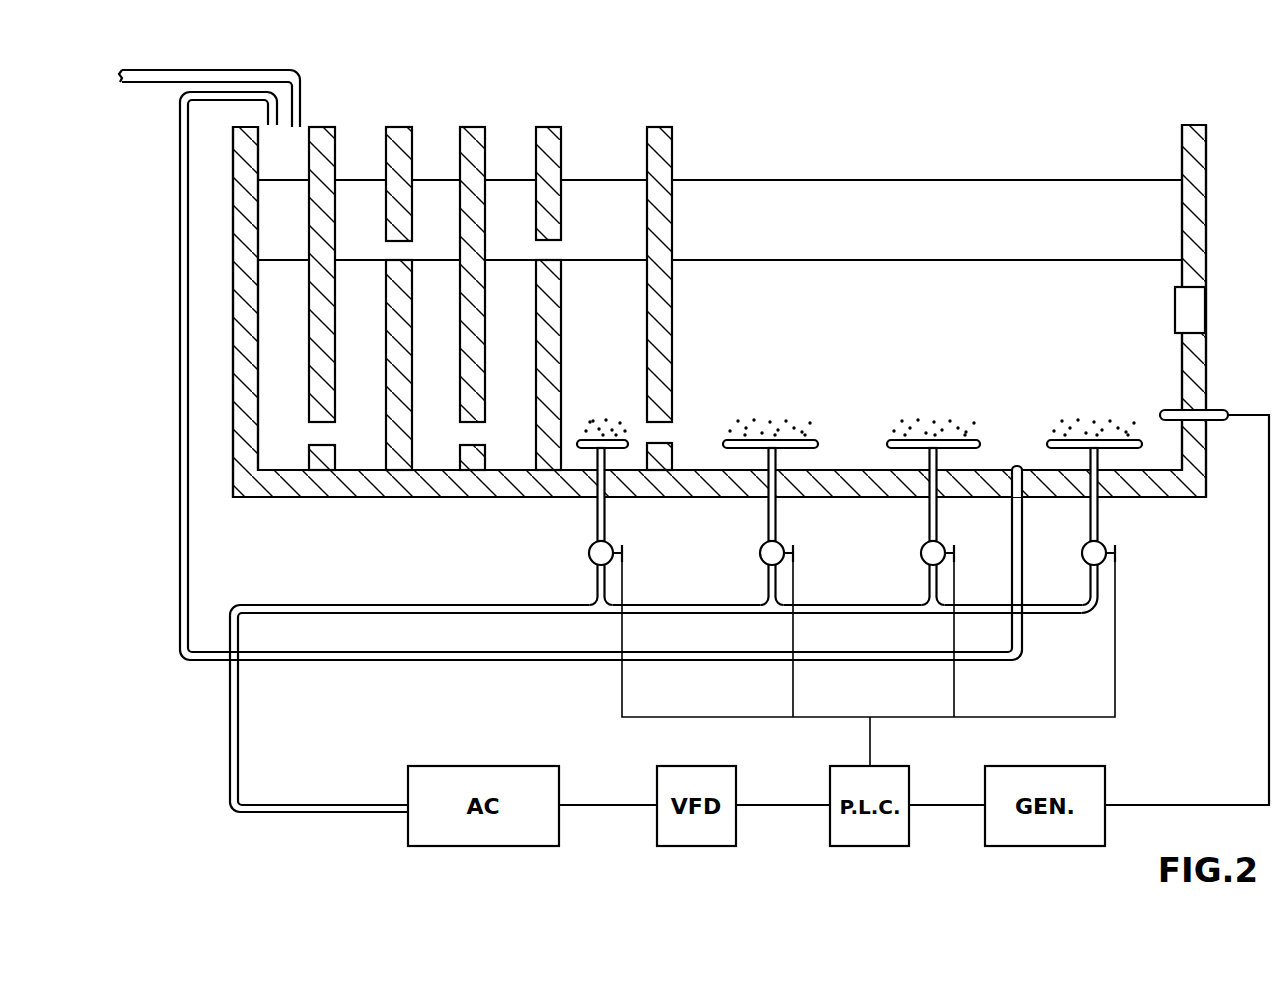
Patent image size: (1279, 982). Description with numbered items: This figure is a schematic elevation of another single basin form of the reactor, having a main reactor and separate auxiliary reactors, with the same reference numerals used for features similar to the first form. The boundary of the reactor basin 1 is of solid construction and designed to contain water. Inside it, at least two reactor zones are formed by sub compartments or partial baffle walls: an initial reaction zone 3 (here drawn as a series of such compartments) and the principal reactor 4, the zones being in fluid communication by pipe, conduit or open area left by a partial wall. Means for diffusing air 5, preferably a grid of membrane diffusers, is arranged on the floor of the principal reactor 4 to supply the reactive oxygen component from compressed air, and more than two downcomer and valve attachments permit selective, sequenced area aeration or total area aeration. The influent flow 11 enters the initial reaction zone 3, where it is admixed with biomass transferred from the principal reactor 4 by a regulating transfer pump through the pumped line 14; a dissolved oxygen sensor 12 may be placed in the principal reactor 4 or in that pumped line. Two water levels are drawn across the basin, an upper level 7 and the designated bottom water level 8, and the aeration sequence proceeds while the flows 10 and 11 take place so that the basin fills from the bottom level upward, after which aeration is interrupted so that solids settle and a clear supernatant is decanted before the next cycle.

The reactor basin boundary 1 is at (1207, 228).
The initial reaction zone 3 is at (611, 352).
The principal reactor 4 is at (905, 363).
The means for diffusing air 5 is at (672, 630).
The high water level 7 is at (788, 180).
The bottom water level 8 is at (800, 260).
The flow 10 is at (1022, 633).
The influent flow 11 is at (293, 76).
The dissolved oxygen sensor 12 is at (1213, 410).
The pumped line feeding biomass 14 is at (180, 585).